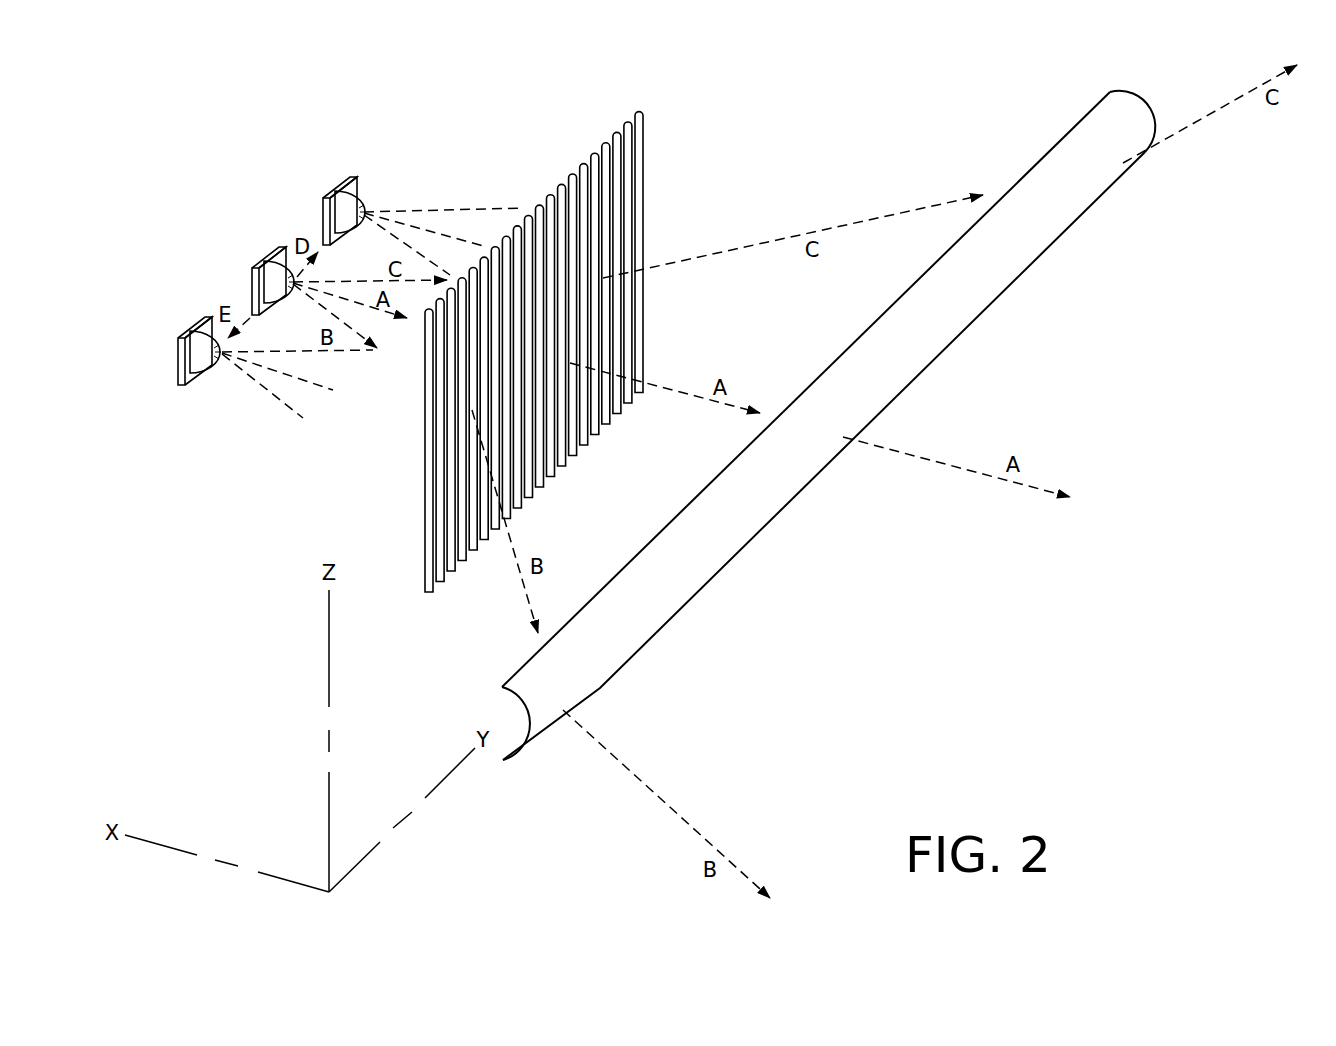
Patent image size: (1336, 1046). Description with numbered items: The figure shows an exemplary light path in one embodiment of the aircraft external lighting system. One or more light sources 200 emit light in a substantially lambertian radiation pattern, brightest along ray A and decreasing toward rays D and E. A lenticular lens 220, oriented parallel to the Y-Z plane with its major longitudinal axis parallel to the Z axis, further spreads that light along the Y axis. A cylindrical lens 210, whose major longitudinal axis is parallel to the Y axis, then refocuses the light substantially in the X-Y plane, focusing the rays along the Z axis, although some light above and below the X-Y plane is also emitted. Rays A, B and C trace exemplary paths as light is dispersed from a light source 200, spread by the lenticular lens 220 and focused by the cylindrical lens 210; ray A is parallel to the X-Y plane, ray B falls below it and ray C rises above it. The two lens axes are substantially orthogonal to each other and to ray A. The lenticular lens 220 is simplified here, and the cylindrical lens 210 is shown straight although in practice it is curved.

The light source 200 is at (373, 153).
The cylindrical lens 210 is at (1138, 103).
The lenticular lens 220 is at (647, 103).